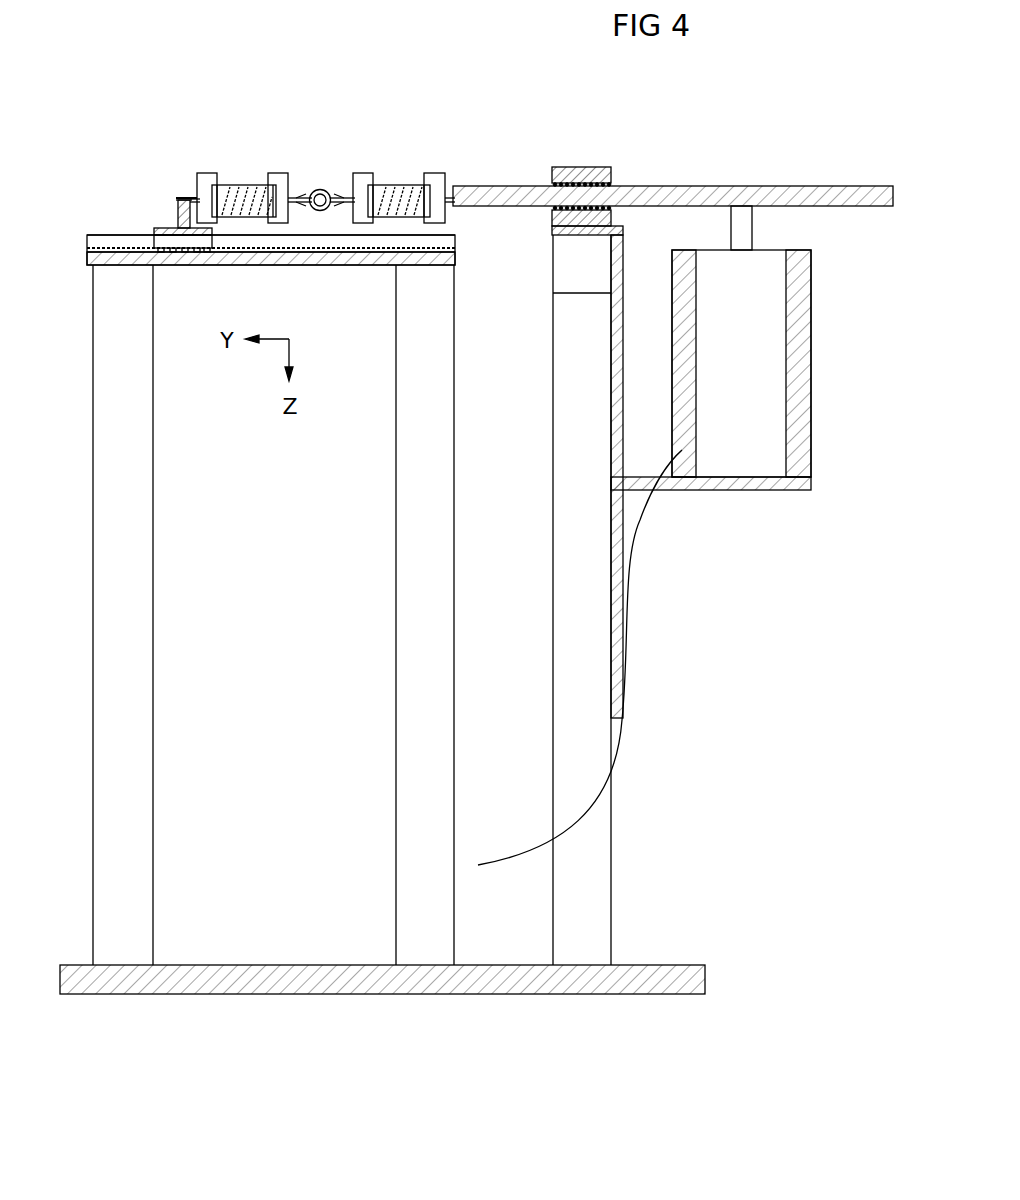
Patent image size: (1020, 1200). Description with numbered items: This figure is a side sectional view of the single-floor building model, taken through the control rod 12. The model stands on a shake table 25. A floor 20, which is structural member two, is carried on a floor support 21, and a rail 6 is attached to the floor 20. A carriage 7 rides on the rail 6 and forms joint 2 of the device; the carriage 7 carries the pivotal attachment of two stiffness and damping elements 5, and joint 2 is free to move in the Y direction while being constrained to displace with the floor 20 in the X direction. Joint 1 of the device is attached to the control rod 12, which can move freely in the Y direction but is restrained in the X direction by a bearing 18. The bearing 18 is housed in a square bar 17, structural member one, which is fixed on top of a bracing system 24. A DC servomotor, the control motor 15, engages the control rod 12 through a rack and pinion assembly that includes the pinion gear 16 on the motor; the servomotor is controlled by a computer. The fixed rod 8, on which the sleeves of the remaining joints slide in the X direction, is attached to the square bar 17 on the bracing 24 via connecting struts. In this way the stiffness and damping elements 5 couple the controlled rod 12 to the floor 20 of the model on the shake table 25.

The joint # 1 is at (459, 155).
The joint # 2 is at (179, 172).
The stiffness and damping element 5 is at (238, 182).
The rail 6 is at (99, 236).
The carriage on rail 7 is at (160, 229).
The fixed rod 8 is at (319, 189).
The control rod 12 is at (735, 190).
The control motor 15 is at (806, 346).
The pinion gear on control motor 16 is at (745, 228).
The bar fixed to bracing 17 is at (576, 167).
The bearing for control rod 18 is at (612, 182).
The floor 20 is at (353, 252).
The floor support 21 is at (412, 480).
The bracing 24 is at (568, 470).
The shake table 25 is at (268, 965).